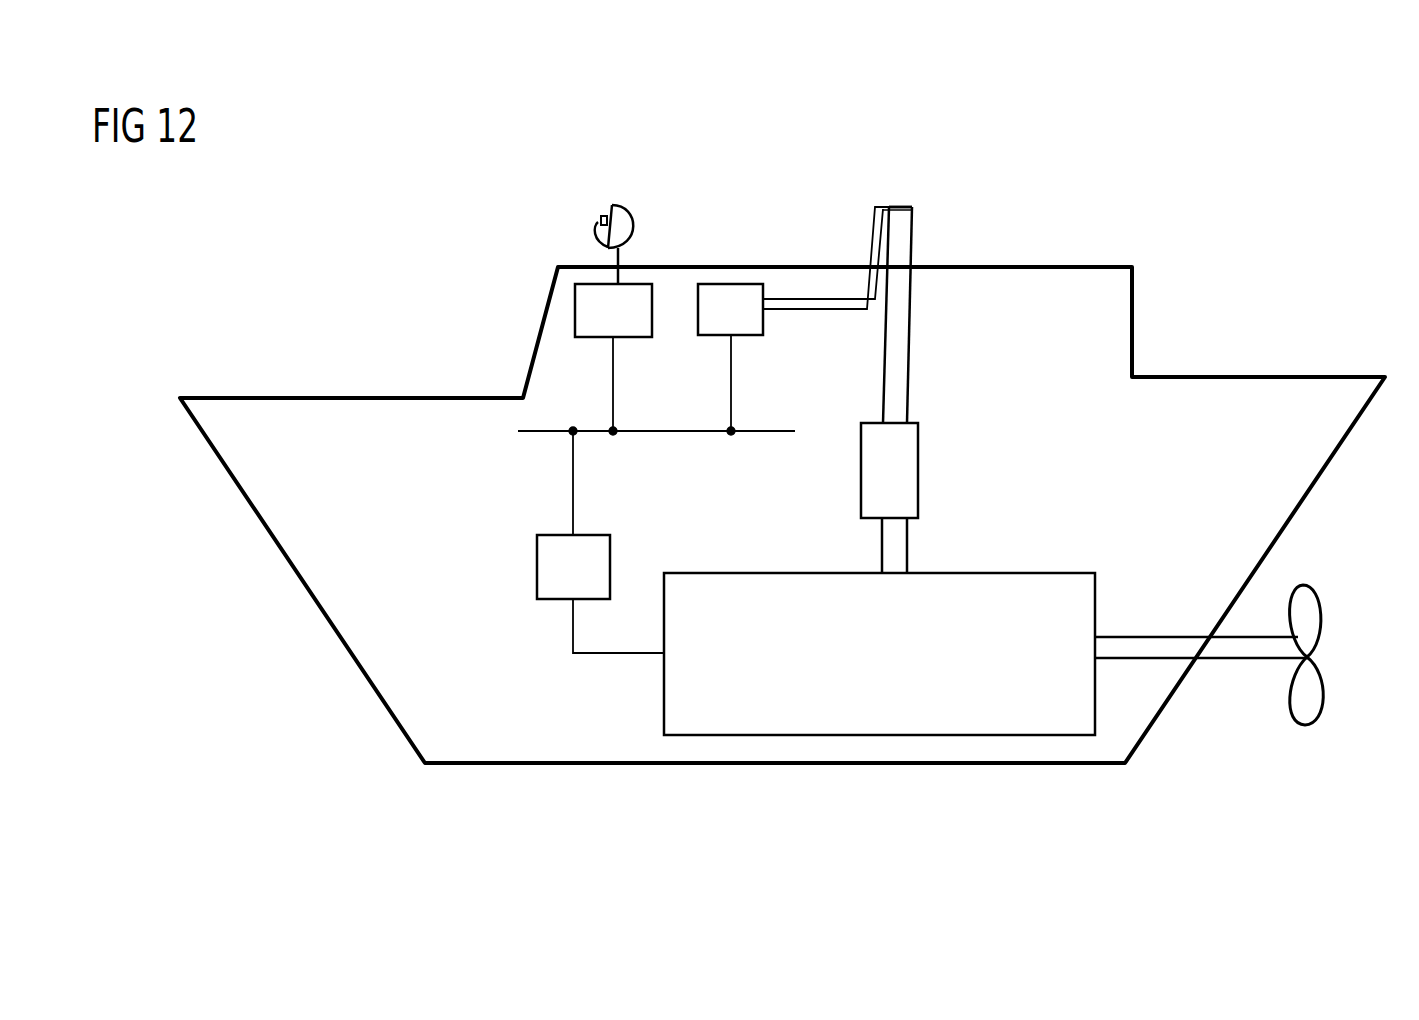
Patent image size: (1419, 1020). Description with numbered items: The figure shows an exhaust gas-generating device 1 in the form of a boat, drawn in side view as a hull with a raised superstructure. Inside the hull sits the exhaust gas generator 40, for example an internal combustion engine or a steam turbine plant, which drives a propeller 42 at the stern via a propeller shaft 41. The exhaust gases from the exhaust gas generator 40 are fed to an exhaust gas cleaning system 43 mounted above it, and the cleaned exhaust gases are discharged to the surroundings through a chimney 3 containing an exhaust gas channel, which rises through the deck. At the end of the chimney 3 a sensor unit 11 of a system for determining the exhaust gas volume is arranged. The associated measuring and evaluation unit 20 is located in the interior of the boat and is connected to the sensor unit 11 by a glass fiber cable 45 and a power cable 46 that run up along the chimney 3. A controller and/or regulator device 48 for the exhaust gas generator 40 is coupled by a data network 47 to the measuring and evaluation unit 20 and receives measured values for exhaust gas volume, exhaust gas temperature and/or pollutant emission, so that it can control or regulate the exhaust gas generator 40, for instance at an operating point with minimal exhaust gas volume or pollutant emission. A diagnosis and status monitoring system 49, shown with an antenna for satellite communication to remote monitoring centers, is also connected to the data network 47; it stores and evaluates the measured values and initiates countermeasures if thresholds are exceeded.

The exhaust gas-generating device 1 is at (1235, 377).
The chimney 3 is at (908, 333).
The sensor unit 11 is at (900, 206).
The measuring and evaluation unit 20 is at (765, 331).
The exhaust gas generator 40 is at (1052, 573).
The propeller shaft 41 is at (1241, 660).
The propeller 42 is at (1322, 606).
The exhaust gas cleaning system 43 is at (918, 493).
The glass fiber cable 45 is at (800, 309).
The power cable 46 is at (849, 299).
The data network 47 is at (685, 432).
The controller and/or regulator device 48 is at (537, 560).
The diagnosis and status monitoring system 49 is at (594, 339).